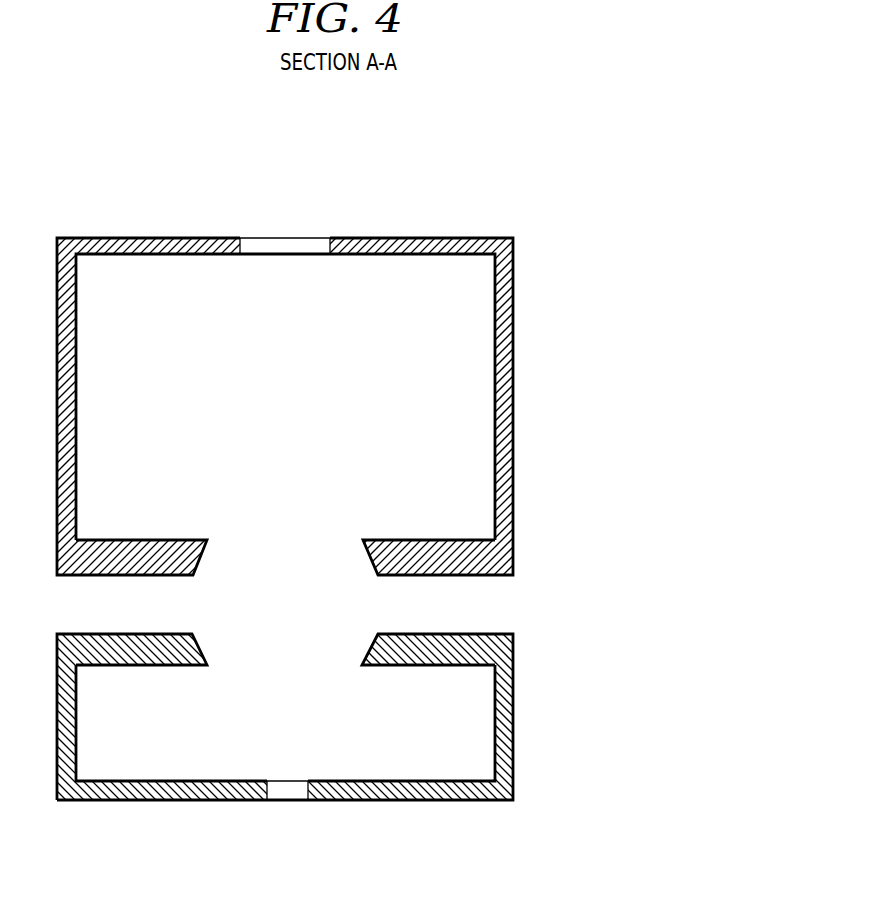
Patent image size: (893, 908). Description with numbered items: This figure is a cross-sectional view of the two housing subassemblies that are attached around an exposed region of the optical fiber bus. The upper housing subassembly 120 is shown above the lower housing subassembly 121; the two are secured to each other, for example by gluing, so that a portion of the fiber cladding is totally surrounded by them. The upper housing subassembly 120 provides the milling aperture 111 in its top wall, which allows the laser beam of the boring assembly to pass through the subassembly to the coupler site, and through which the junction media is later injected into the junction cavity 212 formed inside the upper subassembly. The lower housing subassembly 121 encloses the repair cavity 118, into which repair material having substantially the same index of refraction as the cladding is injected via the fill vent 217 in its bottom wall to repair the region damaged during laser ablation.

The milling aperture 111 is at (298, 237).
The junction cavity 212 is at (465, 297).
The housing subassembly 120 is at (513, 433).
The repair cavity 118 is at (465, 709).
The housing subassembly 121 is at (513, 750).
The fill vent 217 is at (288, 783).